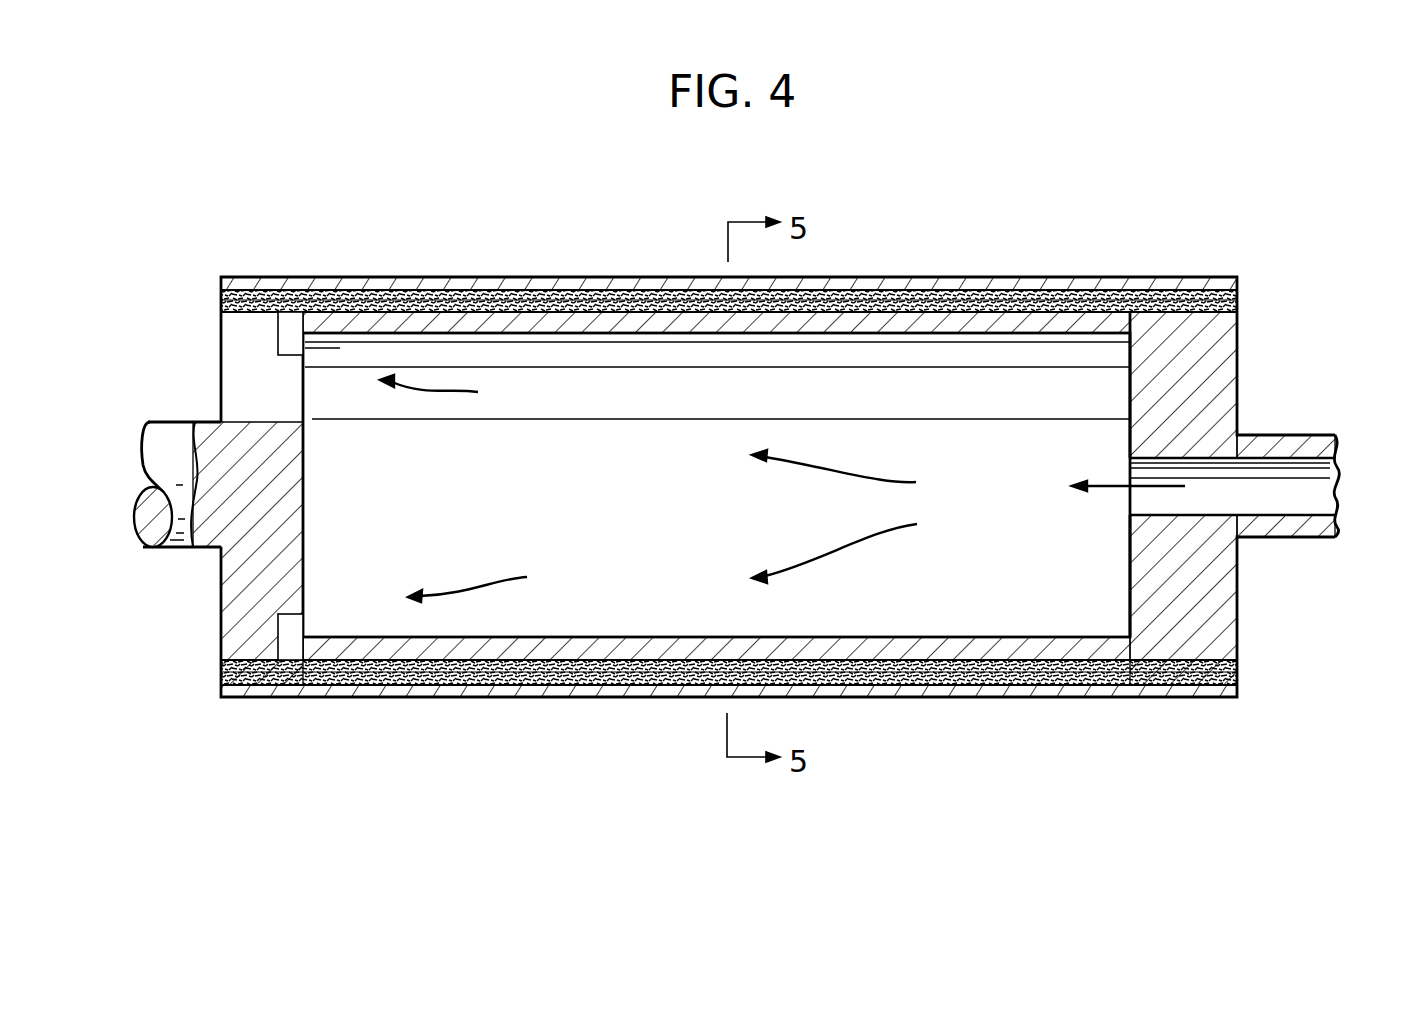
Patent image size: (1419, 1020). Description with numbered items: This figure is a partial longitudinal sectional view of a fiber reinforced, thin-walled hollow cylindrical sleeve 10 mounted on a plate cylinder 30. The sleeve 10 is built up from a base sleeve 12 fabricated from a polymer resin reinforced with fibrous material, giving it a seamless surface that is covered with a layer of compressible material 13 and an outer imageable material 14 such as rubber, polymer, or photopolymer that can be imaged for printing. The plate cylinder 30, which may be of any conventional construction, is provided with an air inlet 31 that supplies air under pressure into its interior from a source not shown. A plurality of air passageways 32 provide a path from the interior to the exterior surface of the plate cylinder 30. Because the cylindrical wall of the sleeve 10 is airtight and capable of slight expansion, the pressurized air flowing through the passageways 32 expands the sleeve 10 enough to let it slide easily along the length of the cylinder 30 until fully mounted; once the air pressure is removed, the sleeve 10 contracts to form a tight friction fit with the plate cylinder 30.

The hollow cylindrical sleeve 10 is at (361, 196).
The base sleeve 12 is at (1233, 310).
The layer of compressible material 13 is at (421, 300).
The imageable material 14 is at (922, 283).
The plate cylinder 30 is at (1220, 360).
The air inlet 31 is at (1320, 497).
The air passageways 32 is at (300, 348).